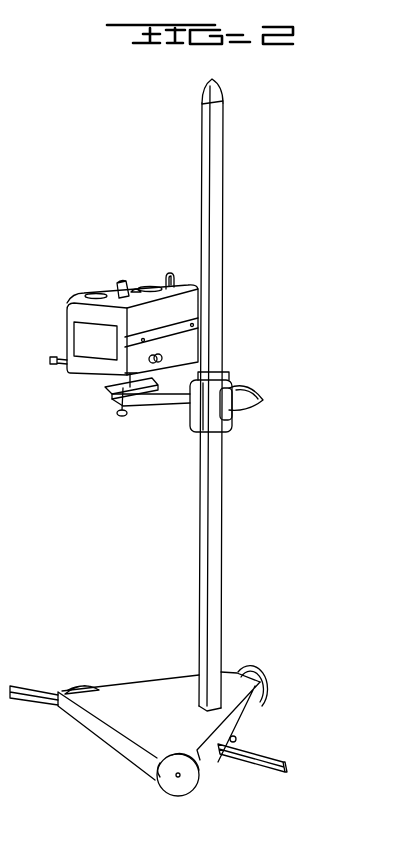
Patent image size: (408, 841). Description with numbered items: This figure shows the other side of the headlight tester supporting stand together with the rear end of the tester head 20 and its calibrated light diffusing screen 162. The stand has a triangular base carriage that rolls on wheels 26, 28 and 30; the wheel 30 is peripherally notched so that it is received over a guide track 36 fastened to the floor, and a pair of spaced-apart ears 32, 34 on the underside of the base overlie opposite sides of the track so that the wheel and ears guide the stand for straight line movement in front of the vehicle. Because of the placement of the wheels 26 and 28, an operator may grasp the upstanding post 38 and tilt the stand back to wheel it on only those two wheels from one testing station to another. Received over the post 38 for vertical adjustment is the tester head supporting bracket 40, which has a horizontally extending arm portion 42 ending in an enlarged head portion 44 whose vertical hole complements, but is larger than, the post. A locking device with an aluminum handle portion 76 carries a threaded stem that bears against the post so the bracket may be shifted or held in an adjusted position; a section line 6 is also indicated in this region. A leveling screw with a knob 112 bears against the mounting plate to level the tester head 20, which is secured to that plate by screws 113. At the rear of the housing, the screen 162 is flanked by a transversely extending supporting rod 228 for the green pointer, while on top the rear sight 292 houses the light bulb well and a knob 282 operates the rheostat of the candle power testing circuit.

The tester head 20 is at (67, 304).
The screen 162 is at (82, 342).
The rear sight 292 is at (117, 290).
The knob 282 is at (137, 289).
The supporting rod 228 is at (54, 365).
The arm portion 42 is at (163, 402).
The knob 112 is at (117, 412).
The tester head supporting bracket 40 is at (182, 414).
The head portion 44 is at (205, 428).
The handle portion 76 is at (241, 404).
The post 38 is at (215, 237).
The section line 6 is at (225, 371).
The ear 32 is at (219, 754).
The screws 113 is at (29, 679).
The wheel 30 is at (84, 684).
The wheel 26 is at (268, 693).
The wheel 28 is at (187, 788).
The ear 34 is at (237, 739).
The guide track 36 is at (281, 758).